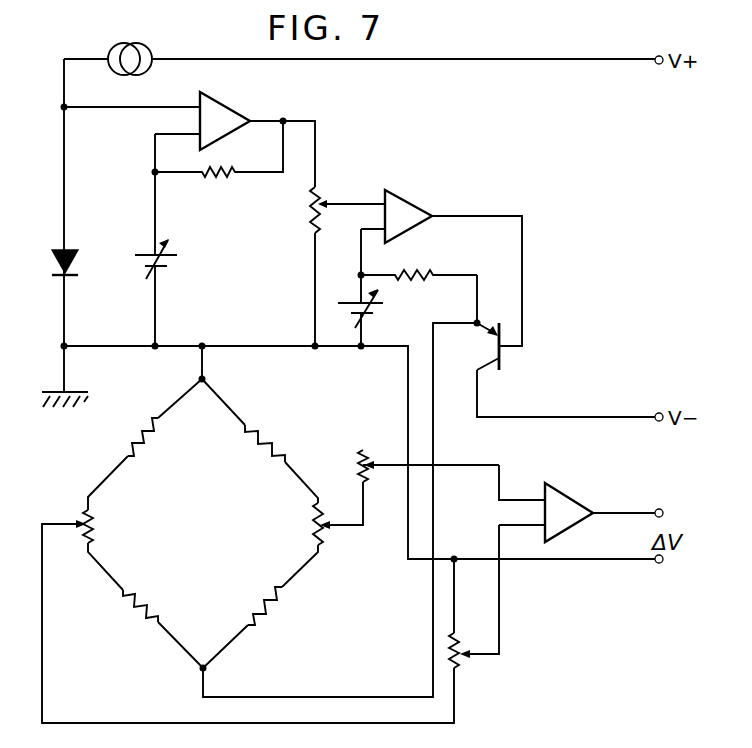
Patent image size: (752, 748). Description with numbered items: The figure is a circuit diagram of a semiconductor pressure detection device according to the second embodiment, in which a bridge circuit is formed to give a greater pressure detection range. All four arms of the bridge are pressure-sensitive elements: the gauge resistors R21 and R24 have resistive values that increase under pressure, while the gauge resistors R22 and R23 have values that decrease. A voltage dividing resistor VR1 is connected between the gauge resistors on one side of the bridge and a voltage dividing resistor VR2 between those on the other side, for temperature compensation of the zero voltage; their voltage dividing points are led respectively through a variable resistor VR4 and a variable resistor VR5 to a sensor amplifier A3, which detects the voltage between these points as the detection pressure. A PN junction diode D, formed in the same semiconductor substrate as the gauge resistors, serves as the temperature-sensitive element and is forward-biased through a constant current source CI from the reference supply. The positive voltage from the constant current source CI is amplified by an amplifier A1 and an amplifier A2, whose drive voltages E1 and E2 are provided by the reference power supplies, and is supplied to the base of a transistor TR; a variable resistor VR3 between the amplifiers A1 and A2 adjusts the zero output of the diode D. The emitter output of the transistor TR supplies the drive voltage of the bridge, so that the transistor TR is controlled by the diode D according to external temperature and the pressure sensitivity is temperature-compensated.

The constant current source CI is at (135, 28).
The amplifier A1 is at (229, 101).
The amplifier A2 is at (407, 198).
The sensor amplifier A3 is at (567, 496).
The PN junction diode D is at (59, 246).
The drive voltage E1 is at (168, 258).
The drive voltage E2 is at (380, 305).
The transistor TR is at (497, 334).
The voltage dividing resistor VR1 is at (90, 521).
The voltage dividing resistor VR2 is at (315, 526).
The variable resistor VR3 is at (324, 193).
The variable resistor VR4 is at (461, 659).
The variable resistor VR5 is at (359, 479).
The gauge resistor R21 is at (141, 455).
The gauge resistor R22 is at (159, 613).
The gauge resistor R23 is at (288, 430).
The gauge resistor R24 is at (281, 605).